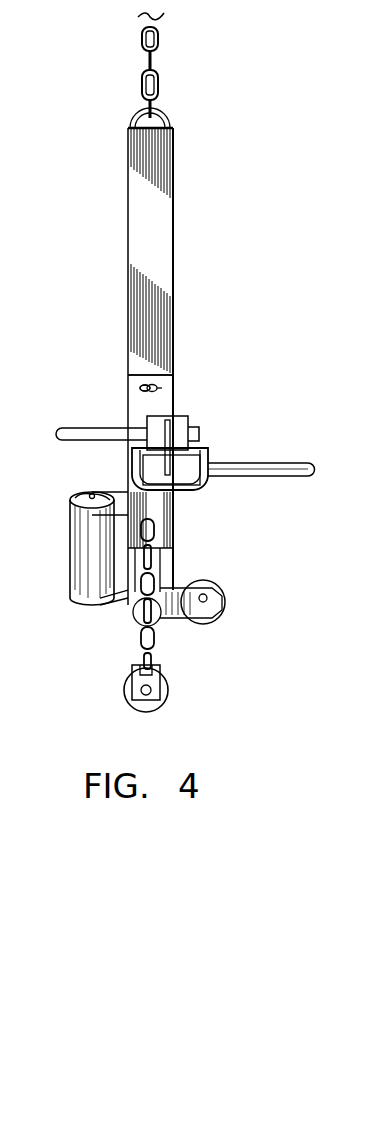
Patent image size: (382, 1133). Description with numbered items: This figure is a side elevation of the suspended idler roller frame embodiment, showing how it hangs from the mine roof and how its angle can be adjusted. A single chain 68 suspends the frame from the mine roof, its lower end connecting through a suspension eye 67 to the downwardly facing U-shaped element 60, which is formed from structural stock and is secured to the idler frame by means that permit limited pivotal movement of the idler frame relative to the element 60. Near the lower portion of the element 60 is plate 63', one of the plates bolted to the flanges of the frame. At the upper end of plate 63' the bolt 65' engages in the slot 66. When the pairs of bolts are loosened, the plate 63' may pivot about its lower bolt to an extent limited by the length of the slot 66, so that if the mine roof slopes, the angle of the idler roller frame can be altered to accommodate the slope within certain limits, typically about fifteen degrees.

The U-shaped element 60 is at (155, 210).
The plate 63' is at (109, 347).
The bolt 65' is at (97, 380).
The slot 66 is at (165, 380).
The suspension eye / hook loop 67 is at (166, 113).
The chain 68 is at (158, 49).